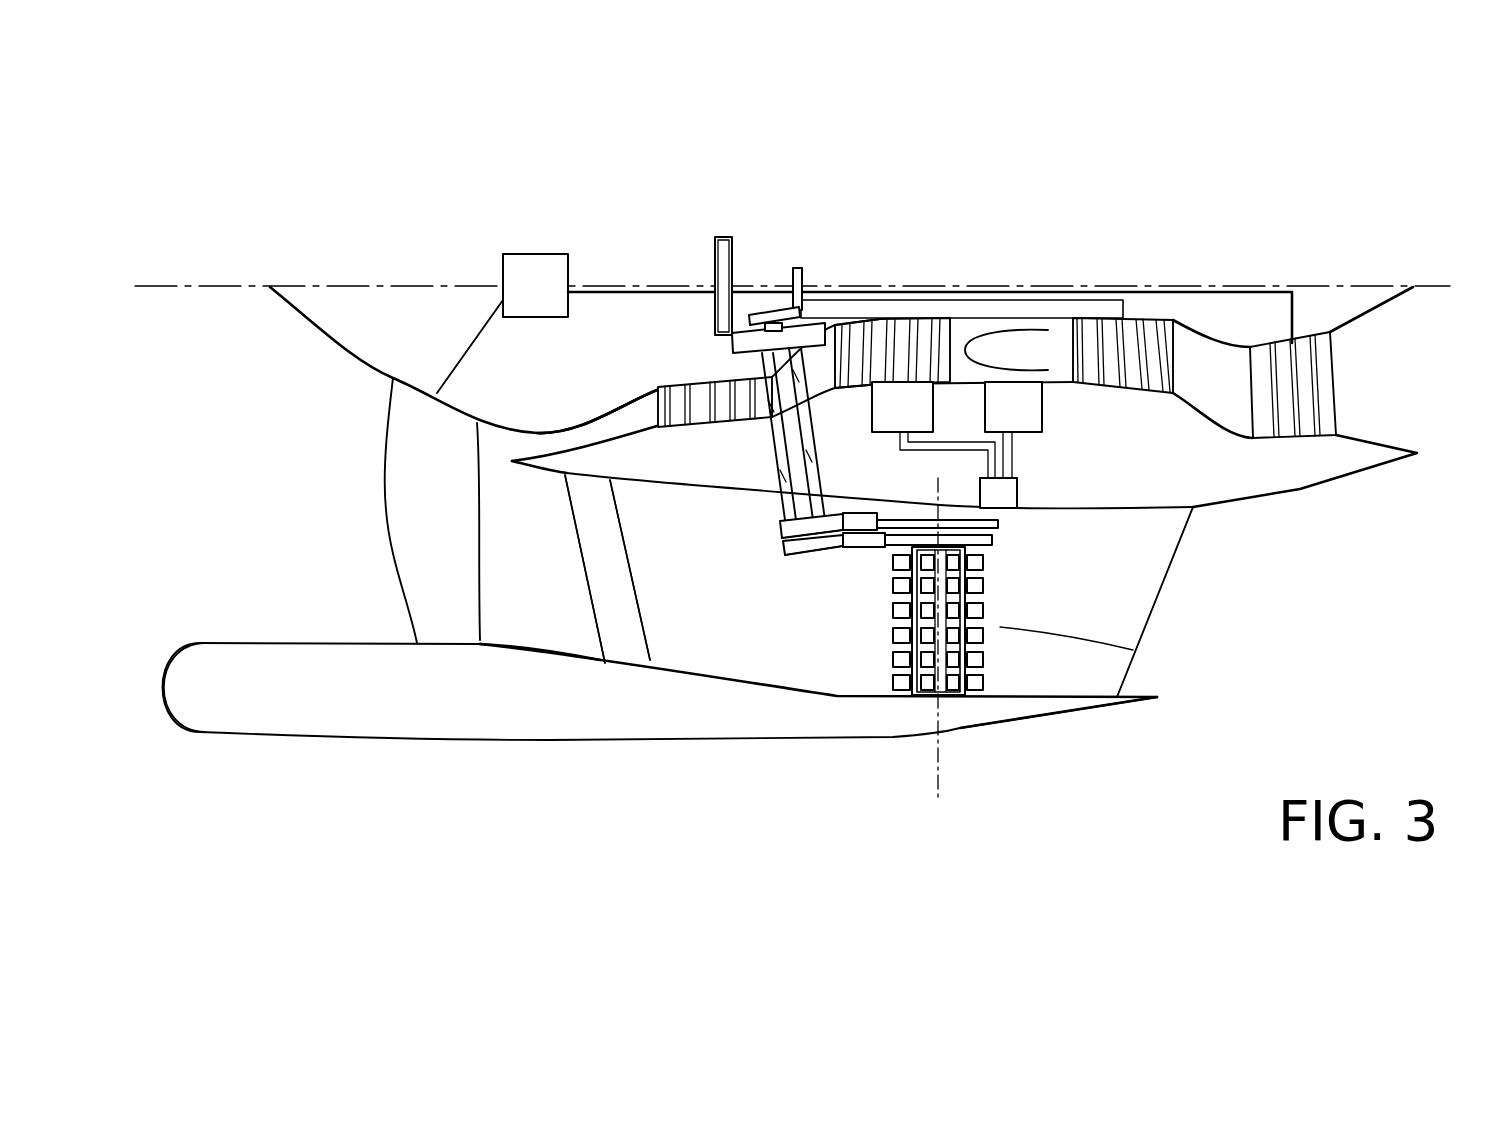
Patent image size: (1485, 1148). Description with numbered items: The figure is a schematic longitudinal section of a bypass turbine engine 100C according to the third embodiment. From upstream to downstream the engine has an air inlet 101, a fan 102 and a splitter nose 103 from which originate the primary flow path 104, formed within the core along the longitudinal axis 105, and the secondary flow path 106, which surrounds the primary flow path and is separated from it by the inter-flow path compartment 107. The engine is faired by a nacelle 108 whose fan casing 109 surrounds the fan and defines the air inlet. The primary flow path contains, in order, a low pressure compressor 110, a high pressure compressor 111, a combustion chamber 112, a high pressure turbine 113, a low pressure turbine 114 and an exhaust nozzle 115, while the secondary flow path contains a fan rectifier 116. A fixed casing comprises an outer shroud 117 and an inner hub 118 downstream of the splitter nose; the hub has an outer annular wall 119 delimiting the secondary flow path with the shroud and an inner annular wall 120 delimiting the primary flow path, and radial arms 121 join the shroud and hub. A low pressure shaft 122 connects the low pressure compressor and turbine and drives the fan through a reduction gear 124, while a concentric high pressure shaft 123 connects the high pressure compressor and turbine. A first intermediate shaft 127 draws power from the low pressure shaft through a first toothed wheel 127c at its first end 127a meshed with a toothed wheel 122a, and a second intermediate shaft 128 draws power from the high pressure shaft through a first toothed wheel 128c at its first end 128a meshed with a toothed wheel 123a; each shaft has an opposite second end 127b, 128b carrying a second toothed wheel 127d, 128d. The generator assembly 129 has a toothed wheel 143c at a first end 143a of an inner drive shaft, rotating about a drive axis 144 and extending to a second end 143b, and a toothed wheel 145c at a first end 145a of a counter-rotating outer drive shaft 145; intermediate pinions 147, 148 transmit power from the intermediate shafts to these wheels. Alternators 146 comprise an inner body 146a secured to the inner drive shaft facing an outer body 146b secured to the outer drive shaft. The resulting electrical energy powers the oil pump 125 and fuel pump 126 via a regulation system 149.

The turbine engine 100C is at (1148, 712).
The air inlet 101 is at (185, 582).
The fan 102 is at (398, 460).
The splitter nose 103 is at (543, 462).
The primary stream flow channel 104 is at (548, 437).
The longitudinal axis 105 is at (188, 285).
The secondary stream flow channel 106 is at (483, 640).
The inter-flow path compartment 107 is at (964, 379).
The nacelle 108 is at (660, 691).
The fan casing 109 is at (213, 653).
The low pressure compressor 110 is at (717, 390).
The high pressure compressor 111 is at (897, 323).
The combustion chamber 112 is at (1007, 329).
The high pressure turbine 113 is at (1148, 336).
The low pressure turbine 114 is at (1317, 343).
The exhaust nozzle 115 is at (1384, 443).
The fan rectifier 116 is at (603, 658).
The outer shroud 117 is at (543, 653).
The inner hub 118 is at (613, 479).
The outer annular wall 119 is at (575, 510).
The inner annular wall 120 is at (658, 389).
The arms 121 is at (651, 657).
The low pressure shaft 122 is at (1068, 293).
The toothed wheel 122a is at (722, 265).
The high pressure shaft 123 is at (1103, 299).
The toothed wheel 123a is at (803, 273).
The reduction gear 124 is at (503, 262).
The oil pump 125 is at (902, 407).
The fuel pump 126 is at (1013, 407).
The first intermediate shaft 127 is at (772, 475).
The first end 127a is at (855, 322).
The second end 127b is at (782, 526).
The first toothed wheel 127c is at (810, 343).
The second toothed wheel 127d is at (785, 552).
The second intermediate shaft 128 is at (805, 490).
The first end 128a is at (768, 312).
The second end 128b is at (817, 553).
The first toothed wheel 128c is at (755, 307).
The second toothed wheel 128d is at (840, 553).
The electrical energy generator assembly 129 is at (1031, 597).
The first end 143a is at (992, 540).
The second end 143b is at (937, 692).
The toothed wheel 143c is at (1000, 520).
The drive axis 144 is at (940, 758).
The outer drive shaft 145 is at (986, 642).
The first end 145a is at (983, 572).
The toothed wheel 145c is at (965, 550).
The alternators 146 is at (983, 657).
The inner body 146a is at (952, 665).
The outer body 146b is at (978, 657).
The intermediate pinion 147 is at (848, 513).
The intermediate pinion 148 is at (867, 533).
The regulation system 149 is at (1017, 500).